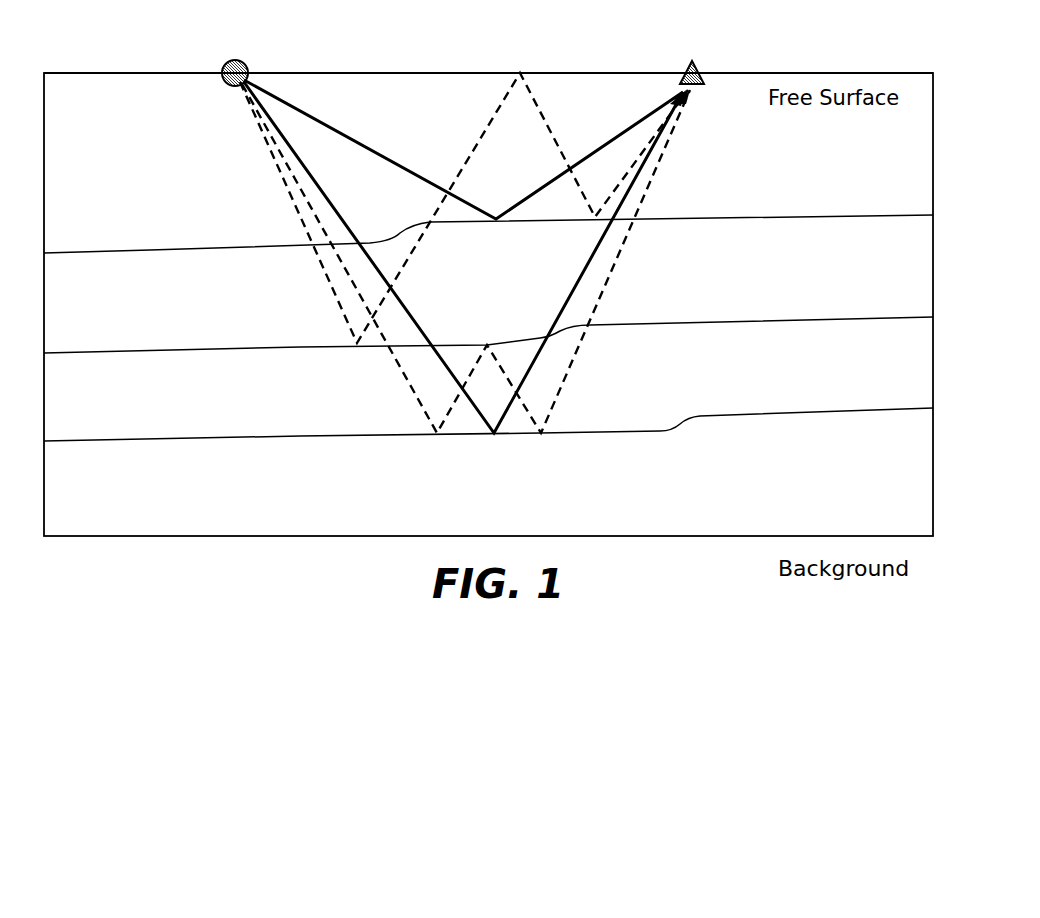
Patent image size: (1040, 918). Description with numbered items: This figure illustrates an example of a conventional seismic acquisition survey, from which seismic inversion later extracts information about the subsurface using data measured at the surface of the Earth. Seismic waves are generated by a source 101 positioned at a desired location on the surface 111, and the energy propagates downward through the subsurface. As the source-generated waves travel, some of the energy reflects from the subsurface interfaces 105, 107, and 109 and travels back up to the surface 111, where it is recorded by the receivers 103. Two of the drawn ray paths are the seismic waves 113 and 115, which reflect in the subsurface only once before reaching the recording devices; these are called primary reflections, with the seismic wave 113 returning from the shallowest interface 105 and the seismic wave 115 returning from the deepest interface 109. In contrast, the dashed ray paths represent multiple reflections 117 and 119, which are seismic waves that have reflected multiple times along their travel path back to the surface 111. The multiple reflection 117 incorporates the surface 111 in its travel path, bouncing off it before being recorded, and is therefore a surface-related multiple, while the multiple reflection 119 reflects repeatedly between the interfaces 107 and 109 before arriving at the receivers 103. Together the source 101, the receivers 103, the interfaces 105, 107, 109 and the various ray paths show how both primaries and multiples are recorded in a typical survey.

The source 101 is at (221, 63).
The receivers 103 is at (694, 61).
The subsurface interface 105 is at (907, 215).
The subsurface interface 107 is at (907, 317).
The subsurface interface 109 is at (907, 408).
The surface 111 is at (378, 72).
The seismic wave (primary reflection) 113 is at (350, 136).
The seismic wave (primary reflection) 115 is at (408, 315).
The multiple reflection 117 is at (327, 274).
The multiple reflection 119 is at (413, 393).